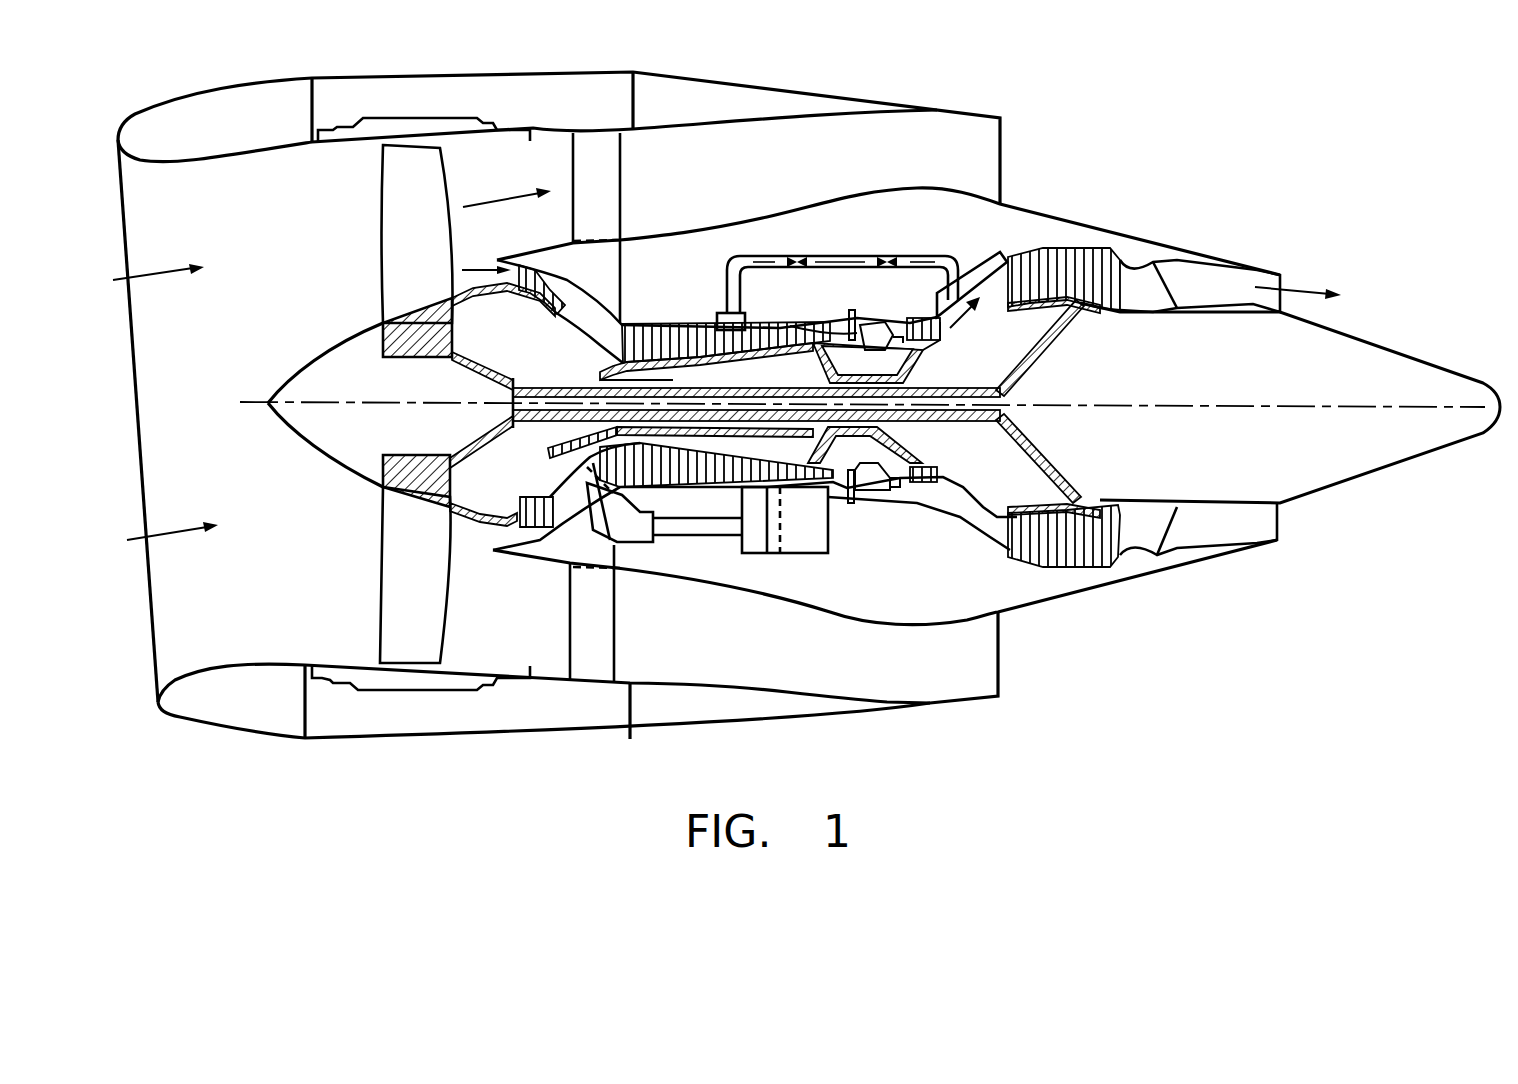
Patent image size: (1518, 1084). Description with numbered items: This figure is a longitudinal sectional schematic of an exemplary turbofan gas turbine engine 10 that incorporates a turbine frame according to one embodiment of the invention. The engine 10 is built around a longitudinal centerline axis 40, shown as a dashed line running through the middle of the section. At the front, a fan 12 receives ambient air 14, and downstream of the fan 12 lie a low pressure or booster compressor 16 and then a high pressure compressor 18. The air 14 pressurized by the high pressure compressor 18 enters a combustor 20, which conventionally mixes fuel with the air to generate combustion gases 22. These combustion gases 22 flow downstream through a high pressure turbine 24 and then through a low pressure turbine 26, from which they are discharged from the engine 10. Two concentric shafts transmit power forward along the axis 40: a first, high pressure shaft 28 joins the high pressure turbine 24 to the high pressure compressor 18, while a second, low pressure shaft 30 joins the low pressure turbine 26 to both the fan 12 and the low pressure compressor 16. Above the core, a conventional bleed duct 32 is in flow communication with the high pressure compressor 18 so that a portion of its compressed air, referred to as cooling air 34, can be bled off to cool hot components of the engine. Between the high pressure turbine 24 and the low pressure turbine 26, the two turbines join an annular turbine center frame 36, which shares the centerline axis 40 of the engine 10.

The turbofan gas turbine engine 10 is at (1024, 129).
The fan 12 is at (364, 312).
The ambient air 14 is at (160, 270).
The booster compressor 16 is at (565, 310).
The high pressure compressor 18 is at (647, 313).
The combustor 20 is at (872, 330).
The combustion gases 22 is at (1298, 288).
The high pressure turbine 24 is at (917, 316).
The low pressure turbine 26 is at (1062, 247).
The high pressure shaft 28 is at (919, 445).
The low pressure shaft 30 is at (966, 423).
The bleed duct 32 is at (838, 257).
The cooling air 34 is at (863, 257).
The turbine center frame 36 is at (998, 245).
The centerline axis 40 is at (1133, 397).